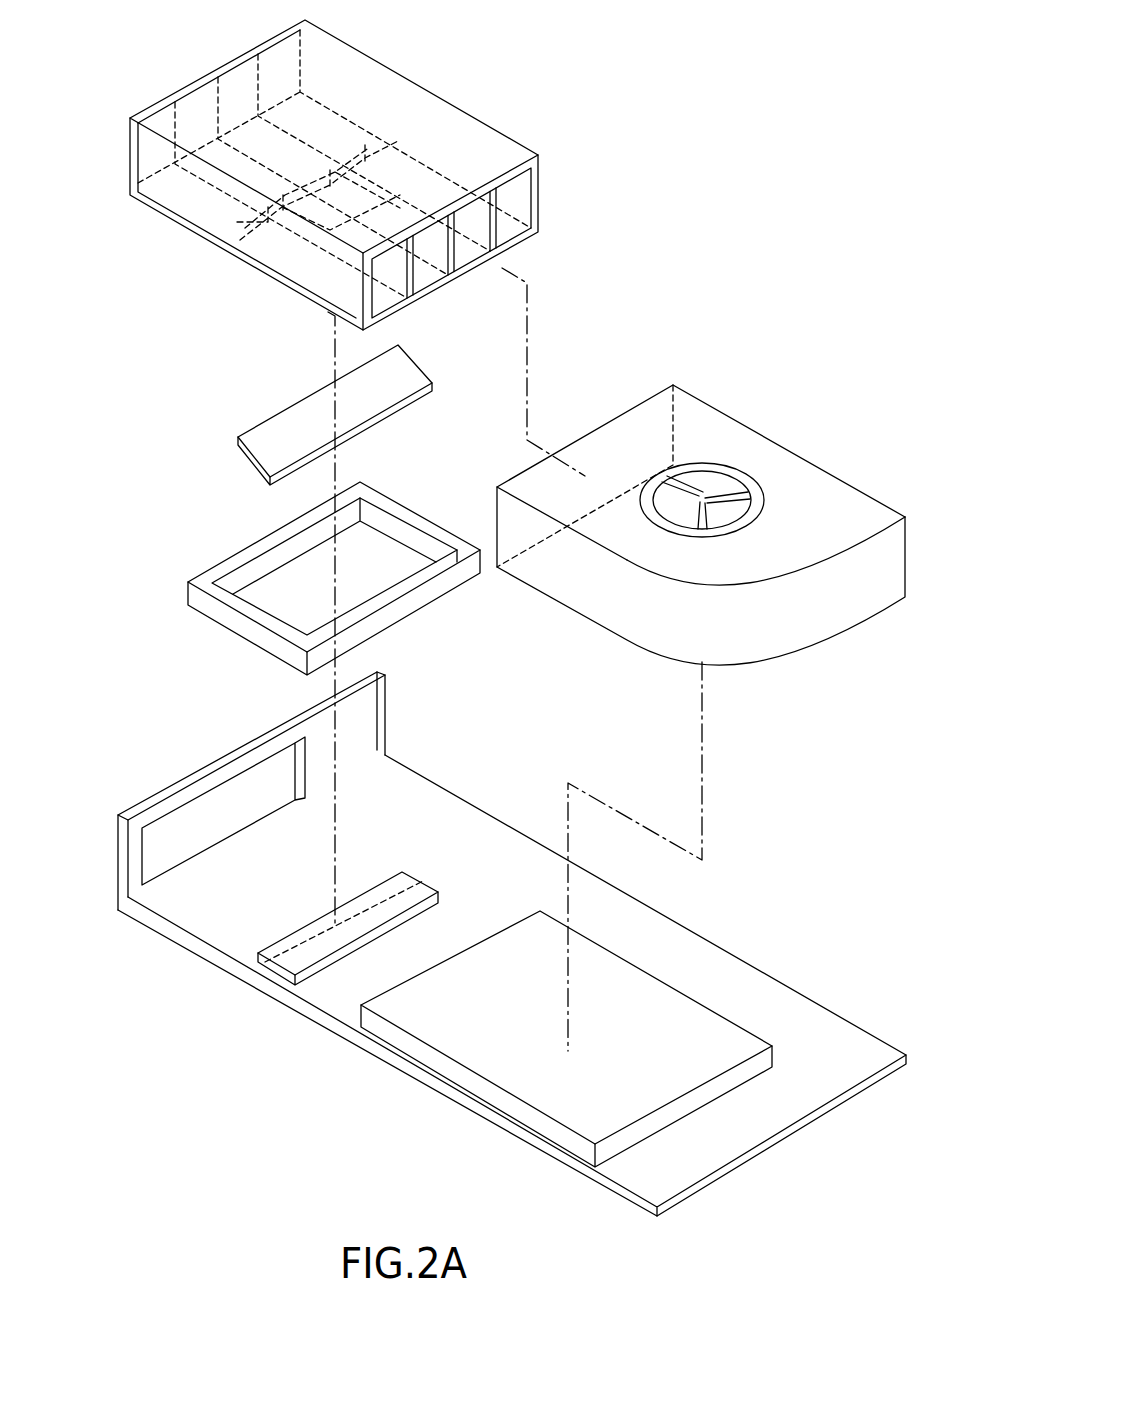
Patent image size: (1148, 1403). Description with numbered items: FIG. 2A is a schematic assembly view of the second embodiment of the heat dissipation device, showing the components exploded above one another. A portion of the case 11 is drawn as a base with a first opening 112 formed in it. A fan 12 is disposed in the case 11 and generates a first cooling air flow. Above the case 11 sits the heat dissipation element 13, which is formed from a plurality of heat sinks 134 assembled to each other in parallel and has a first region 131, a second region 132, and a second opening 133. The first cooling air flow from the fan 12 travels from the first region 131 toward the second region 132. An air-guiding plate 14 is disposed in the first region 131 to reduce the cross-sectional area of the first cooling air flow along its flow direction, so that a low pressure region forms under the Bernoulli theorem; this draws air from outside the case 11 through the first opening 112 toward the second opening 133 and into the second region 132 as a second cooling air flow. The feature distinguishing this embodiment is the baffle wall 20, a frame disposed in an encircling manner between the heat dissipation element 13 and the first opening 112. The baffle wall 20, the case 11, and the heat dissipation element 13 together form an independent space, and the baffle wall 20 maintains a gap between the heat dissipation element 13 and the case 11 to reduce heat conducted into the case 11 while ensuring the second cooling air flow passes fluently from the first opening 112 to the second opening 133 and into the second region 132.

The case 11 is at (233, 748).
The first opening 112 is at (367, 898).
The fan 12 is at (790, 452).
The heat dissipation element 13 is at (422, 84).
The first region 131 is at (462, 128).
The second region 132 is at (342, 67).
The second opening 133 is at (282, 243).
The heat sinks 134 is at (522, 240).
The air-guiding plate 14 is at (277, 417).
The baffle wall 20 is at (228, 562).